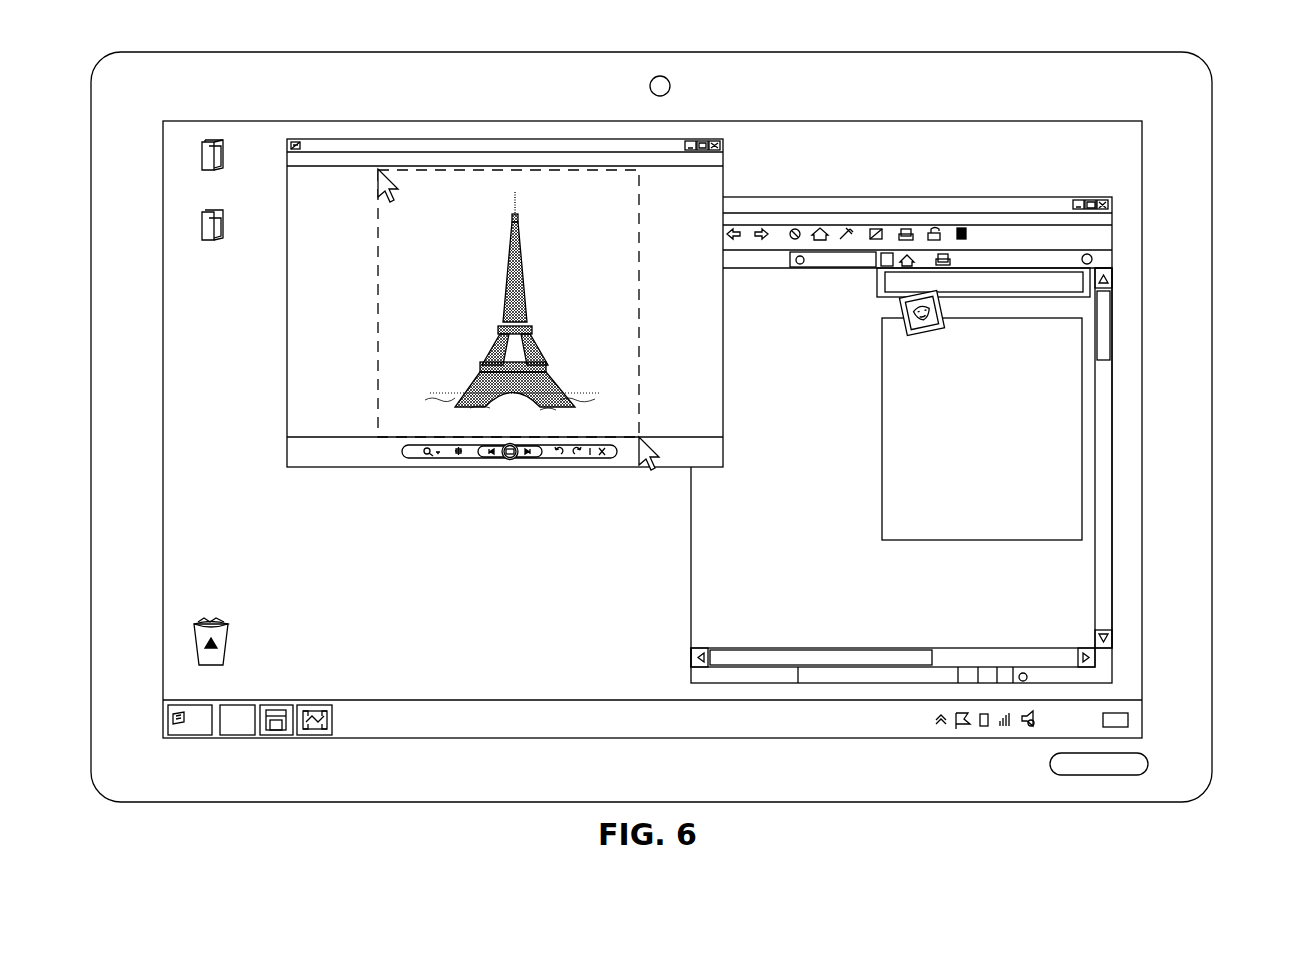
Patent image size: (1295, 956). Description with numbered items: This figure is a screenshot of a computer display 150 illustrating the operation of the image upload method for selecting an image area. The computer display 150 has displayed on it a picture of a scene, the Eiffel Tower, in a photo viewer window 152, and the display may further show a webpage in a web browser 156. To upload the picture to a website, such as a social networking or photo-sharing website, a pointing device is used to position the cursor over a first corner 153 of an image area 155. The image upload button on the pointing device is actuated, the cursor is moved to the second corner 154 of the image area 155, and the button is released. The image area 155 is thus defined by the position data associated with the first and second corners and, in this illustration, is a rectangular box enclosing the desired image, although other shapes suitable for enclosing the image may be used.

The computer display 150 is at (1212, 213).
The photo viewer window 152 is at (724, 157).
The first corner 153 is at (397, 200).
The second corner 154 is at (653, 468).
The image area 155 is at (378, 244).
The web browser window 156 is at (691, 563).